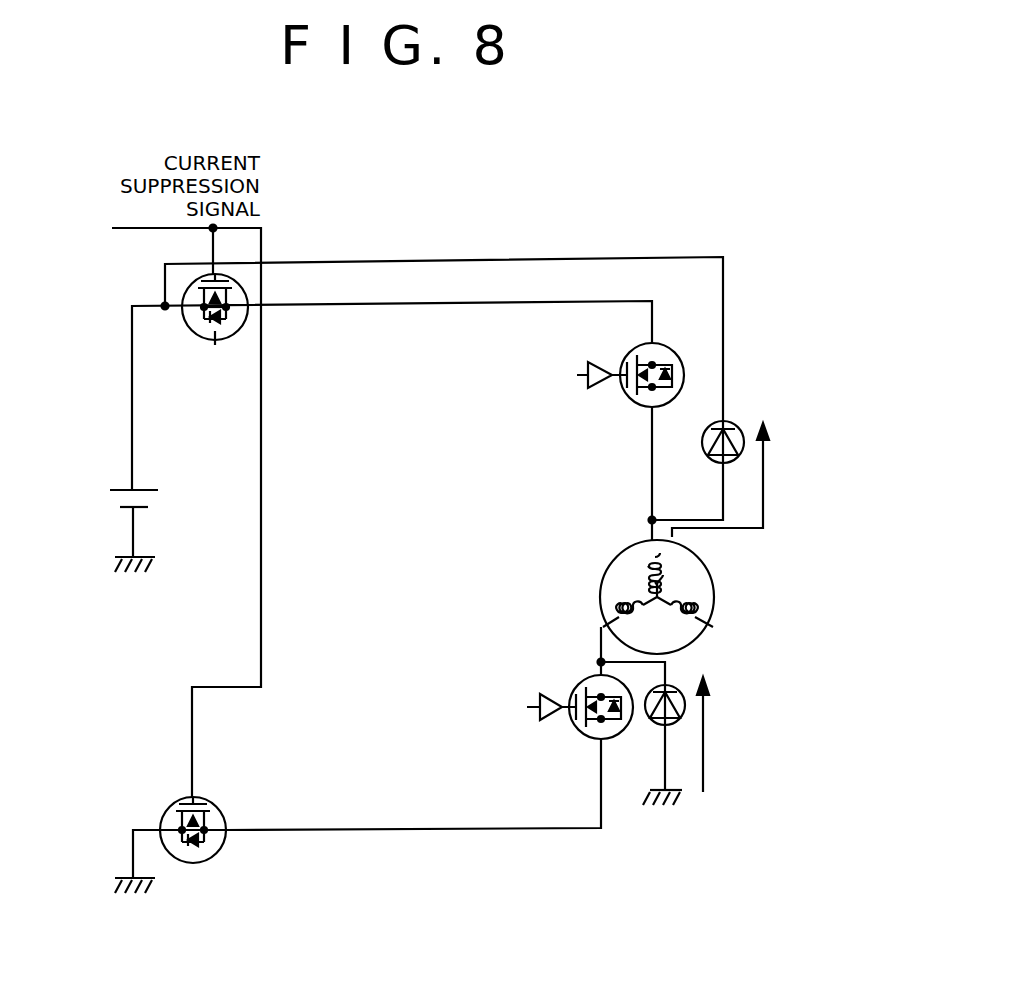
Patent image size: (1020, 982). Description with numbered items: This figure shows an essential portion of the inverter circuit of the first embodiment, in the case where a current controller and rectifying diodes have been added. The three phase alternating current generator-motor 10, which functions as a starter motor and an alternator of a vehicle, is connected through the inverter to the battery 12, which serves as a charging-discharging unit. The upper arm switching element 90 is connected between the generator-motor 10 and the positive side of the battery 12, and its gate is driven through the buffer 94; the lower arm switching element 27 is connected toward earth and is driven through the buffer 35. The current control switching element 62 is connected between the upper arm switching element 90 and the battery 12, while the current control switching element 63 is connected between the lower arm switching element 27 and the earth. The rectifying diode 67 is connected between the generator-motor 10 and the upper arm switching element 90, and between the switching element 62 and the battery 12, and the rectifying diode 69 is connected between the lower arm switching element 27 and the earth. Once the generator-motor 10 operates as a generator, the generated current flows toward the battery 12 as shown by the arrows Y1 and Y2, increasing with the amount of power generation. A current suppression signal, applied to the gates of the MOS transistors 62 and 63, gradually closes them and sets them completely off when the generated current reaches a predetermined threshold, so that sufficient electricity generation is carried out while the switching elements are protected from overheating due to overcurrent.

The three phase alternating current generator-motor 10 is at (610, 563).
The battery 12 is at (125, 488).
The lower arm switching element 27 is at (585, 738).
The buffer 35 is at (538, 695).
The current control switching element 62 is at (215, 342).
The current control switching element 63 is at (173, 802).
The rectifying diode 67 is at (732, 427).
The rectifying diode 69 is at (657, 727).
The upper arm switching element 90 is at (623, 397).
The buffer 94 is at (588, 365).
The arrow indicating generated current flow Y1 is at (703, 740).
The arrow indicating generated current flow Y2 is at (750, 532).